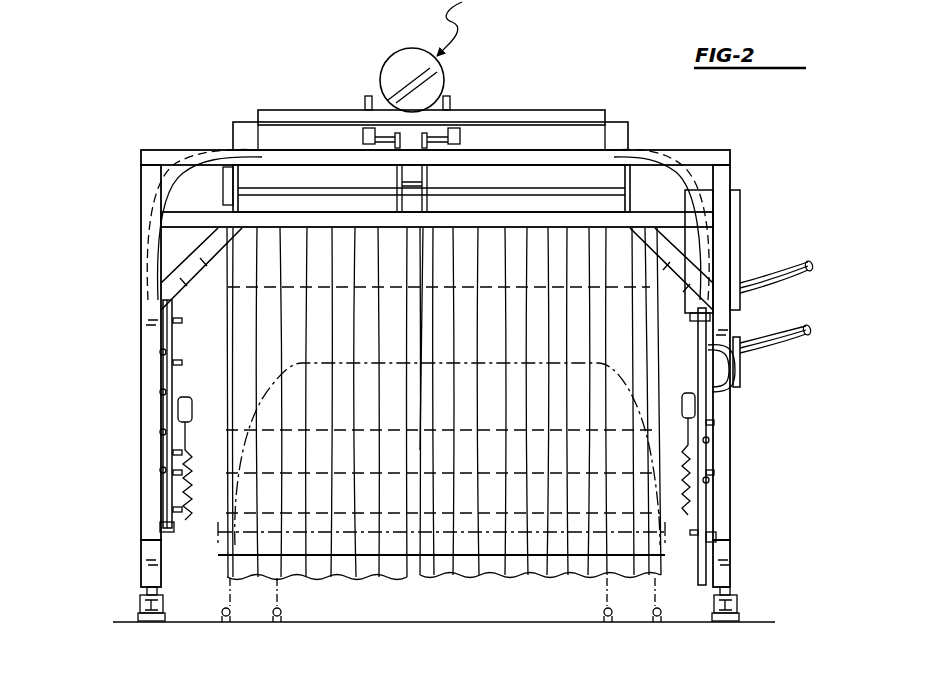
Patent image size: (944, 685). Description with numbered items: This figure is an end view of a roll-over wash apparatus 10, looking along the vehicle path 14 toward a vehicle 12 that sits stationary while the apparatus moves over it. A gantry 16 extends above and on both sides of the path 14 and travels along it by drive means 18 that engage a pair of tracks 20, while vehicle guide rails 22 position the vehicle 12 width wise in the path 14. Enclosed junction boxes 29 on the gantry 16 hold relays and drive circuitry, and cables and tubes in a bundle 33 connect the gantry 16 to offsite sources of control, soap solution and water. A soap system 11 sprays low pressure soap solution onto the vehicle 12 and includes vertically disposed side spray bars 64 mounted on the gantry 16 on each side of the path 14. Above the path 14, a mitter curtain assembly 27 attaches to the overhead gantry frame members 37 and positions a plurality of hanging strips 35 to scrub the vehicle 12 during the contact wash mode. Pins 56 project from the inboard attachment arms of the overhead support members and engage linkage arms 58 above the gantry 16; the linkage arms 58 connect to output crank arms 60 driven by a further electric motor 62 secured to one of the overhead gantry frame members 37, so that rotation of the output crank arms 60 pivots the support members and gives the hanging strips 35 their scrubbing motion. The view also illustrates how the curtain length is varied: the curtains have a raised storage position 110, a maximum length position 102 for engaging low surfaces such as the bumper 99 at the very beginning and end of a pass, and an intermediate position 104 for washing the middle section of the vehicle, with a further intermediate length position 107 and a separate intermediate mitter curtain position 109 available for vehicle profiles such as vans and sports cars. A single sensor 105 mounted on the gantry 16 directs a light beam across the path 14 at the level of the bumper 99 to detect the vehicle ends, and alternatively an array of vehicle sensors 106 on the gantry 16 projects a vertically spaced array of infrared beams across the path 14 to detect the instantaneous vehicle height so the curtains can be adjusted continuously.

The roll-over wash apparatus 10 is at (200, 112).
The soap system 11 is at (165, 165).
The vehicle 12 is at (604, 390).
The vehicle path 14 is at (392, 604).
The gantry 16 is at (728, 150).
The drive means 18 is at (148, 565).
The tracks 20 is at (150, 622).
The vehicle guide rails 22 is at (232, 610).
The mitter curtain assembly 27 is at (642, 298).
The junction boxes 29 is at (740, 258).
The bundle 33 is at (806, 264).
The hanging strips 35 is at (443, 568).
The overhead gantry frame members 37 is at (592, 110).
The pins 56 is at (380, 140).
The linkage arm 58 is at (368, 132).
The output crank arms 60 is at (378, 100).
The further electric motor 62 is at (403, 67).
The side spray bars 64 is at (168, 330).
The bumper 99 is at (538, 545).
The maximum length position 102 is at (215, 555).
The intermediate position 104 is at (222, 511).
The sensor 105 is at (163, 528).
The vehicle sensors 106 is at (163, 432).
The intermediate length position 107 is at (222, 432).
The intermediate mitter curtain position 109 is at (222, 472).
The raised storage position 110 is at (222, 287).